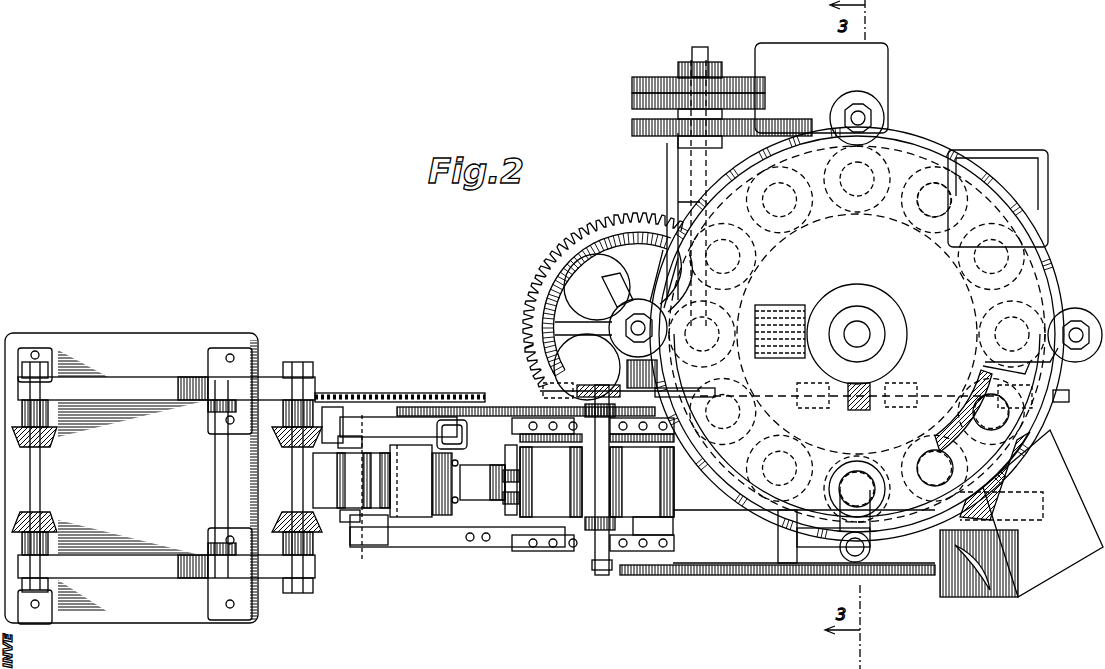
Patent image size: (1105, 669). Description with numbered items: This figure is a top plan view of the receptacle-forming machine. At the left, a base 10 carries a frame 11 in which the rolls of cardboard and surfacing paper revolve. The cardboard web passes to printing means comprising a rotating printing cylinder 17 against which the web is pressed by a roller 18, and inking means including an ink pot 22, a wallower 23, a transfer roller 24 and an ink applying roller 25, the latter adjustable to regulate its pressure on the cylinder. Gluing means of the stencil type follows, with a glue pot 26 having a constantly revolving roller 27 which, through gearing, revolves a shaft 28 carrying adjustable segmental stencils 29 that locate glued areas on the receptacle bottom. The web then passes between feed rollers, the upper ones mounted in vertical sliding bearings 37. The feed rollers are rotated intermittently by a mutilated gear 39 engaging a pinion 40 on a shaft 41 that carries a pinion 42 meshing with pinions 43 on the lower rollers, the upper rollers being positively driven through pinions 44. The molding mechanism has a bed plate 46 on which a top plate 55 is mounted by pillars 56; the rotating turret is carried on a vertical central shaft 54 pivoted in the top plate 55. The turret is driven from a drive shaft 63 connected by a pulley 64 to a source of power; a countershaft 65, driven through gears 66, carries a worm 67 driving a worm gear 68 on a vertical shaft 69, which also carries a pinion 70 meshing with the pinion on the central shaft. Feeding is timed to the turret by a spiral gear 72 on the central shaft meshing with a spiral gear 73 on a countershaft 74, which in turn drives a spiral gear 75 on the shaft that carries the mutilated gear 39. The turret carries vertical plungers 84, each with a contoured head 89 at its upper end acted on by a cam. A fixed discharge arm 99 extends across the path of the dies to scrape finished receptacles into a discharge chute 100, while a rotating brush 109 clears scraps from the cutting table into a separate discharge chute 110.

The base 10 is at (258, 604).
The frame 11 is at (268, 378).
The printing cylinder 17 is at (416, 547).
The roller 18 is at (400, 530).
The ink pot 22 is at (288, 490).
The wallower 23 is at (351, 480).
The transfer roller 24 is at (352, 512).
The ink applying roller 25 is at (411, 481).
The glue pot 26 is at (444, 516).
The roller 27 is at (478, 481).
The shaft 28 is at (500, 407).
The segmental stencils 29 is at (520, 504).
The vertical sliding bearings 37 is at (525, 392).
The mutilated gear 39 is at (675, 528).
The pinion 40 is at (602, 555).
The shaft 41 is at (604, 490).
The pinion 42 is at (586, 385).
The pinions 43 is at (560, 406).
The pinions 44 is at (553, 447).
The bed plate 46 is at (1050, 486).
The vertical central shaft 54 is at (857, 322).
The top plate 55 is at (990, 202).
The pillars 56 is at (865, 118).
The drive shaft 63 is at (704, 47).
The pulley 64 is at (636, 82).
The countershaft 65 is at (857, 334).
The gears 66 is at (754, 117).
The worm 67 is at (800, 305).
The worm gear 68 is at (532, 280).
The vertical shaft 69 is at (612, 316).
The pinion 70 is at (522, 300).
The spiral gear 72 is at (906, 336).
The spiral gear 73 is at (862, 383).
The countershaft 74 is at (1069, 396).
The spiral gear 75 is at (612, 384).
The vertical plungers 84 is at (890, 216).
The head 89 is at (930, 214).
The discharge arm 99 is at (1018, 488).
The discharge chute 100 is at (1056, 558).
The rotating brush 109 is at (935, 575).
The discharge chute 110 is at (990, 590).